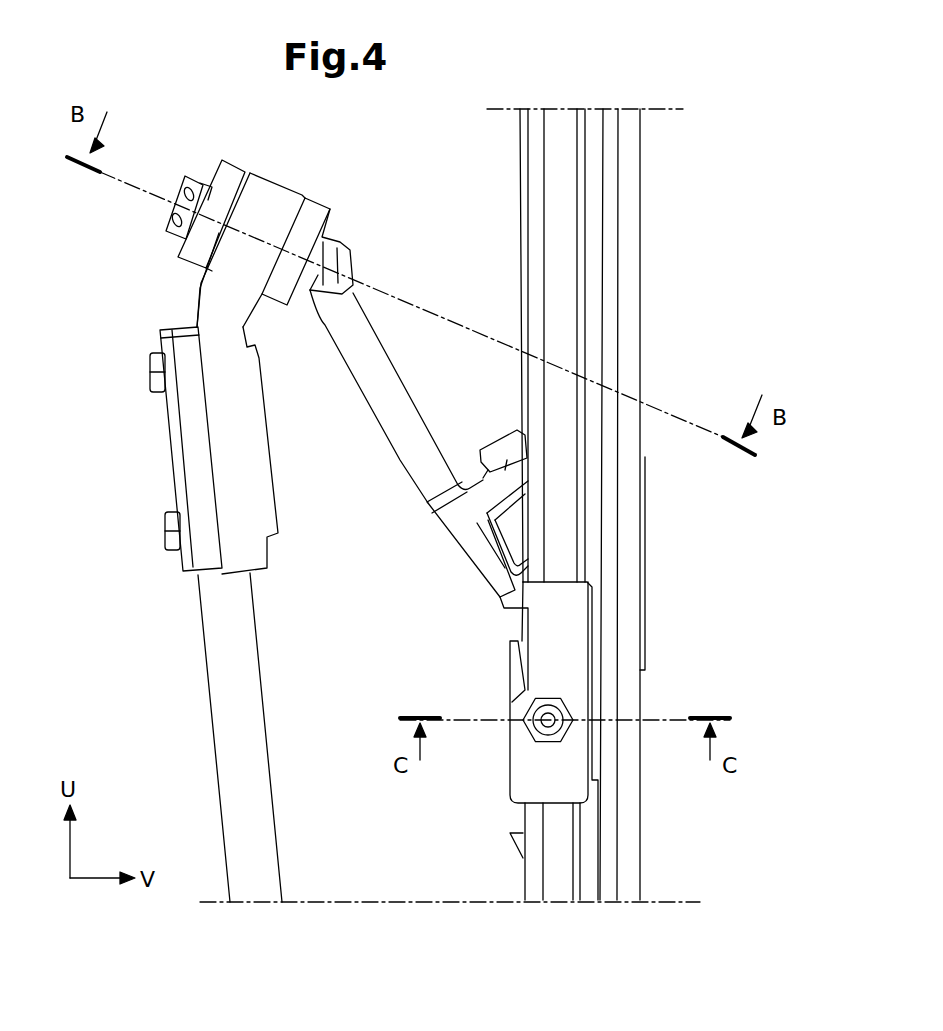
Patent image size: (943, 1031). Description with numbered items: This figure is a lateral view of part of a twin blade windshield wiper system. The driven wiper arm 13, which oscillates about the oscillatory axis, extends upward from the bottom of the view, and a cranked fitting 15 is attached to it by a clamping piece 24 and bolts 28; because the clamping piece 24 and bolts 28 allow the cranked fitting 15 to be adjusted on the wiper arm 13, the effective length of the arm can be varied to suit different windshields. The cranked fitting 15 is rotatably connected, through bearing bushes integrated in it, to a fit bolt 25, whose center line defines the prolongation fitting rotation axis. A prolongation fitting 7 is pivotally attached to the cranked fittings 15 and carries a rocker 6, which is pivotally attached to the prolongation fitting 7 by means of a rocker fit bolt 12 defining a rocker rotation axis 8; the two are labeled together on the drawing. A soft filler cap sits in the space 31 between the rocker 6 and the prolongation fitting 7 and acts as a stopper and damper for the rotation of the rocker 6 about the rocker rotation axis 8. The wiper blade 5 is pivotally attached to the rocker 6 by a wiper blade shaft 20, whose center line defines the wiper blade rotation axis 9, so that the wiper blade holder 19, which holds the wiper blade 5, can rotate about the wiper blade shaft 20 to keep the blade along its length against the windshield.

The wiper blade 5 is at (560, 165).
The rocker 6 is at (520, 508).
The prolongation fitting 7 is at (423, 467).
The rocker rotation axis 8 is at (495, 457).
The rocker fit bolt 12 is at (480, 427).
The wiper blade rotation axis 9 is at (499, 698).
The wiper blade shaft 20 is at (548, 698).
The wiper arm 13 is at (220, 680).
The cranked fitting 15 is at (218, 295).
The wiper blade holder 19 is at (533, 778).
The clamping piece 24 is at (263, 458).
The fit bolt 25 is at (178, 201).
The bolts 28 is at (150, 381).
The space 31 is at (500, 550).